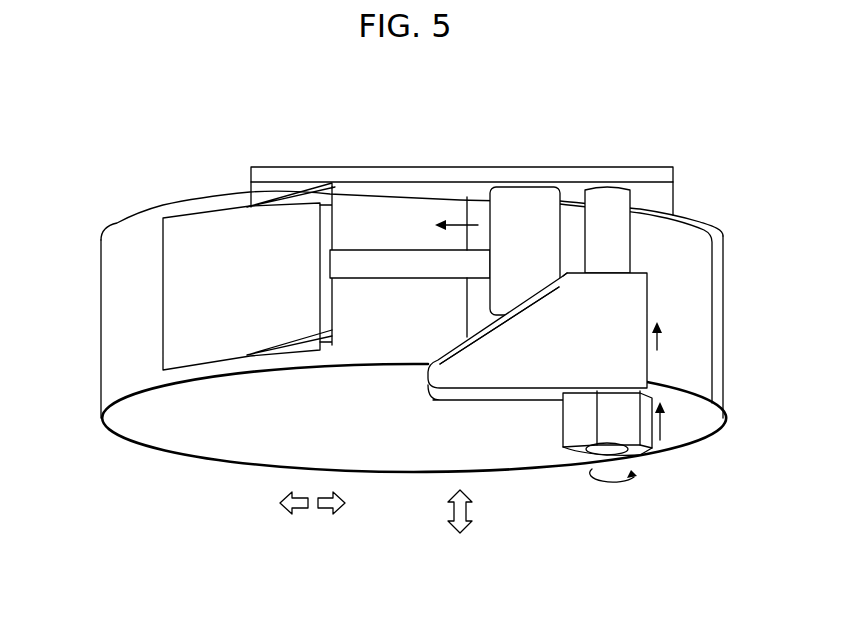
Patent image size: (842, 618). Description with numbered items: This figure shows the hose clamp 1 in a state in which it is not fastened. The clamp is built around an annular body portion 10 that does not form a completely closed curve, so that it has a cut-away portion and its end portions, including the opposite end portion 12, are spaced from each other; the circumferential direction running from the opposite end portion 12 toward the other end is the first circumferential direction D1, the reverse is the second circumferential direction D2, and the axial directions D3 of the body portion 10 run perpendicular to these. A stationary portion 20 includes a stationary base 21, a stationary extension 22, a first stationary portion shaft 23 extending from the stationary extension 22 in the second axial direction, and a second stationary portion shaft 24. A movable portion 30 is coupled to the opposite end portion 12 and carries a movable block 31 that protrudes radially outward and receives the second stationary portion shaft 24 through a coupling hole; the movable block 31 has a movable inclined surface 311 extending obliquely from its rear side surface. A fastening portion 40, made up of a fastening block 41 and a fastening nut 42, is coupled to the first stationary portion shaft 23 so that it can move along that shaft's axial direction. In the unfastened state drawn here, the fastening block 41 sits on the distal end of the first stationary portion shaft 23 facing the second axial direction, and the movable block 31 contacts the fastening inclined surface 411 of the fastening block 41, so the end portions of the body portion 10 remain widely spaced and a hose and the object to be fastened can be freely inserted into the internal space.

The hose clamp 1 is at (409, 338).
The body portion 10 is at (385, 307).
The opposite end portion 12 is at (698, 222).
The stationary portion 20 is at (418, 227).
The stationary base 21 is at (232, 236).
The stationary extension 22 is at (307, 167).
The first stationary portion shaft 23 is at (613, 200).
The second stationary portion shaft 24 is at (360, 255).
The movable portion 30 is at (600, 345).
The movable block 31 is at (524, 200).
The movable inclined surface 311 is at (543, 276).
The fastening portion 40 is at (540, 345).
The fastening block 41 is at (537, 324).
The fastening inclined surface 411 is at (528, 303).
The fastening nut 42 is at (577, 453).
The first circumferential direction D1 is at (298, 515).
The second circumferential direction D2 is at (328, 515).
The axial directions D3 is at (450, 508).